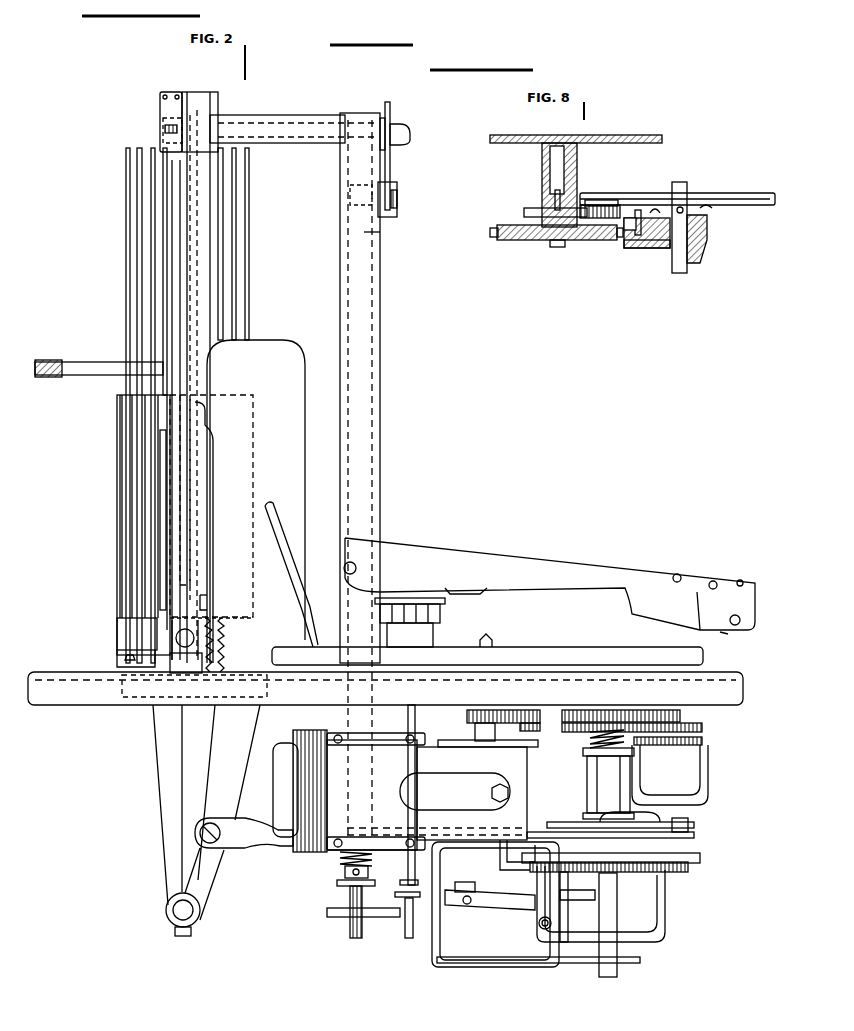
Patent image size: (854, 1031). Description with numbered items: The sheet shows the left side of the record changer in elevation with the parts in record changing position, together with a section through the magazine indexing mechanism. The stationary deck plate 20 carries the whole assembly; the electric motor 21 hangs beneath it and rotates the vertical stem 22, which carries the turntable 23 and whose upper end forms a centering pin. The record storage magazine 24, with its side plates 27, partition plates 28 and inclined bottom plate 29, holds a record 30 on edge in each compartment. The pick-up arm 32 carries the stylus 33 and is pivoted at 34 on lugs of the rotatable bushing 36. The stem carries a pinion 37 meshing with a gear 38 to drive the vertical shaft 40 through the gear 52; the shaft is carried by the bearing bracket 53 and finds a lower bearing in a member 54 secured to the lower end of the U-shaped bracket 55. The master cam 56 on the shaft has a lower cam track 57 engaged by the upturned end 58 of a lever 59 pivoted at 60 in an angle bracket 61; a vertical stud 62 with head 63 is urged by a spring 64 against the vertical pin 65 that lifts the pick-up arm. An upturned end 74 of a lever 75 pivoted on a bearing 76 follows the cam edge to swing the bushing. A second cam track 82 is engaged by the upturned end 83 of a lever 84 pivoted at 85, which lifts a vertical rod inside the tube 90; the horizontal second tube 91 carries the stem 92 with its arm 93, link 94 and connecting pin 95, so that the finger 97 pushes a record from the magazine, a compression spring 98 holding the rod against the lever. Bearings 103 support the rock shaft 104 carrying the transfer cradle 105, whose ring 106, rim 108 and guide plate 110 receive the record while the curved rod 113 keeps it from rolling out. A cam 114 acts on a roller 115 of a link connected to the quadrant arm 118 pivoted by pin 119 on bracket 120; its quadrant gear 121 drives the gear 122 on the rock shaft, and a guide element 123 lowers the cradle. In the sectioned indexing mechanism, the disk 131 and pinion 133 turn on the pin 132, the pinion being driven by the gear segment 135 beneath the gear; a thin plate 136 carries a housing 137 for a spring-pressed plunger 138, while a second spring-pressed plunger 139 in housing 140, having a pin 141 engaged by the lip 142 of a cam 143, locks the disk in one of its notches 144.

In FIG. 2, the deck plate 20 is at (55, 692).
In FIG. 8, the deck plate 20 is at (642, 135).
In FIG. 2, the electric motor 21 is at (285, 778).
In FIG. 2, the vertical stem 22 is at (494, 640).
In FIG. 2, the turntable 23 is at (618, 648).
In FIG. 2, the record storage magazine 24 is at (117, 408).
In FIG. 2, the side plates 27 is at (117, 537).
In FIG. 2, the partition plates 28 is at (132, 512).
In FIG. 2, the bottom plate 29 is at (228, 397).
In FIG. 2, the record 30 is at (137, 190).
In FIG. 2, the pick-up arm 32 is at (528, 556).
In FIG. 2, the stylus 33 is at (731, 630).
In FIG. 2, the pivot 34 is at (356, 566).
In FIG. 2, the rotatable bushing 36 is at (445, 613).
In FIG. 2, the pinion 37 is at (467, 718).
In FIG. 2, the gear 38 is at (680, 716).
In FIG. 2, the vertical shaft 40 is at (617, 945).
In FIG. 8, the vertical shaft 40 is at (688, 270).
In FIG. 2, the gear 52 is at (702, 728).
In FIG. 8, the gear 52 is at (758, 193).
In FIG. 2, the bearing bracket 53 is at (708, 780).
In FIG. 2, the bottom plate 54 is at (640, 962).
In FIG. 2, the U-shaped bracket 55 is at (500, 967).
In FIG. 2, the master cam 56 is at (700, 857).
In FIG. 2, the cam track 57 is at (688, 868).
In FIG. 2, the upturned end 58 is at (560, 892).
In FIG. 2, the lever 59 is at (515, 895).
In FIG. 2, the pivot 60 is at (465, 885).
In FIG. 2, the angle bracket 61 is at (458, 940).
In FIG. 2, the vertical stud 62 is at (408, 938).
In FIG. 2, the head 63 is at (405, 882).
In FIG. 2, the spring 64 is at (395, 894).
In FIG. 2, the vertical pin 65 is at (408, 718).
In FIG. 2, the upturned end 74 is at (522, 842).
In FIG. 2, the lever 75 is at (490, 866).
In FIG. 2, the bearing 76 is at (507, 858).
In FIG. 2, the cam track 82 is at (660, 908).
In FIG. 2, the upturned end 83 is at (660, 902).
In FIG. 2, the lever 84 is at (583, 945).
In FIG. 2, the pivot 85 is at (545, 930).
In FIG. 2, the tube 90 is at (380, 410).
In FIG. 2, the second tube 91 is at (260, 117).
In FIG. 2, the stem 92 is at (288, 126).
In FIG. 2, the arm 93 is at (390, 120).
In FIG. 2, the link 94 is at (390, 168).
In FIG. 2, the connecting pin 95 is at (397, 199).
In FIG. 2, the finger 97 is at (180, 262).
In FIG. 2, the compression spring 98 is at (340, 858).
In FIG. 2, the bearings 103 is at (192, 660).
In FIG. 2, the rock shaft 104 is at (150, 632).
In FIG. 2, the transfer cradle 105 is at (172, 603).
In FIG. 2, the ring 106 is at (203, 265).
In FIG. 2, the rim 108 is at (172, 490).
In FIG. 2, the guide plate 110 is at (160, 107).
In FIG. 2, the curved rod 113 is at (280, 505).
In FIG. 2, the cam 114 is at (665, 818).
In FIG. 2, the roller 115 is at (690, 824).
In FIG. 2, the quadrant arm 118 is at (200, 880).
In FIG. 2, the pin 119 is at (172, 918).
In FIG. 2, the bracket 120 is at (164, 818).
In FIG. 2, the quadrant gear 121 is at (267, 693).
In FIG. 2, the gear 122 is at (220, 640).
In FIG. 2, the guide element 123 is at (645, 810).
In FIG. 8, the disk 131 is at (584, 240).
In FIG. 8, the pin 132 is at (550, 168).
In FIG. 8, the pinion 133 is at (540, 208).
In FIG. 2, the gear segment 135 is at (702, 742).
In FIG. 8, the thin plate 136 is at (524, 211).
In FIG. 8, the housing 137 is at (618, 200).
In FIG. 8, the spring-pressed plunger 138 is at (594, 205).
In FIG. 8, the spring-pressed plunger 139 is at (634, 250).
In FIG. 8, the housing 140 is at (650, 250).
In FIG. 8, the pin 141 is at (658, 210).
In FIG. 8, the lip 142 is at (638, 210).
In FIG. 8, the cam 143 is at (710, 228).
In FIG. 8, the notches 144 is at (492, 236).